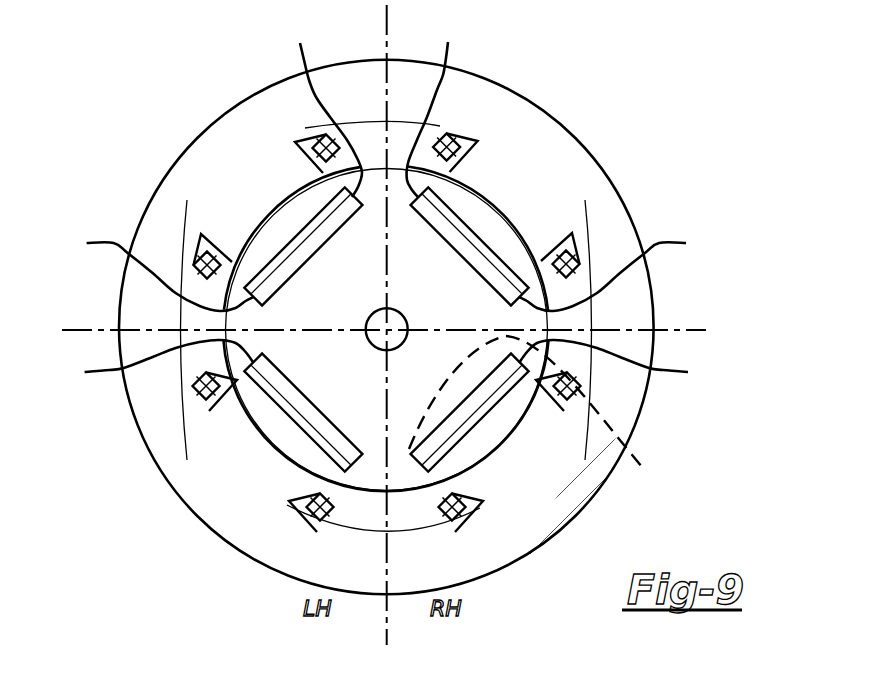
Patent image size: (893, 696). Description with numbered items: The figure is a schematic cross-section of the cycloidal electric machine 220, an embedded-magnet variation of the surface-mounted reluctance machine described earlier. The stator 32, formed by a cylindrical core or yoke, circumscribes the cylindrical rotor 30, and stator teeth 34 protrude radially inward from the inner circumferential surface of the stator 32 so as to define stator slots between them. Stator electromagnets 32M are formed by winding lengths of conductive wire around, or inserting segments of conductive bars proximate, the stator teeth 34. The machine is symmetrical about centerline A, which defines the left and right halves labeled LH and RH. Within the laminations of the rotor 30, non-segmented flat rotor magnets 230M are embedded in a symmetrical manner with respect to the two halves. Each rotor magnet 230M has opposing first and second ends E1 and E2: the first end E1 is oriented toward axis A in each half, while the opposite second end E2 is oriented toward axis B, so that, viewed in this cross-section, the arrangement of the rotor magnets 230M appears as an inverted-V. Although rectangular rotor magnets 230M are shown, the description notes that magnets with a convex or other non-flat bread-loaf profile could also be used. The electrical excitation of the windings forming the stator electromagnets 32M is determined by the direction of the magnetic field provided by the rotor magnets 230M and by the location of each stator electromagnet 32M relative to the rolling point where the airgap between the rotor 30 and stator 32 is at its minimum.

The cycloidal electric machine 220 is at (690, 61).
The rotor 30 is at (437, 392).
The stator 32 is at (579, 505).
The stator teeth 34 is at (490, 95).
The stator electromagnets 32M is at (317, 140).
The rotor magnets 230M is at (282, 245).
The first end E1 is at (370, 107).
The second end E2 is at (386, 307).
The centerline A is at (383, 40).
The axis B is at (106, 326).